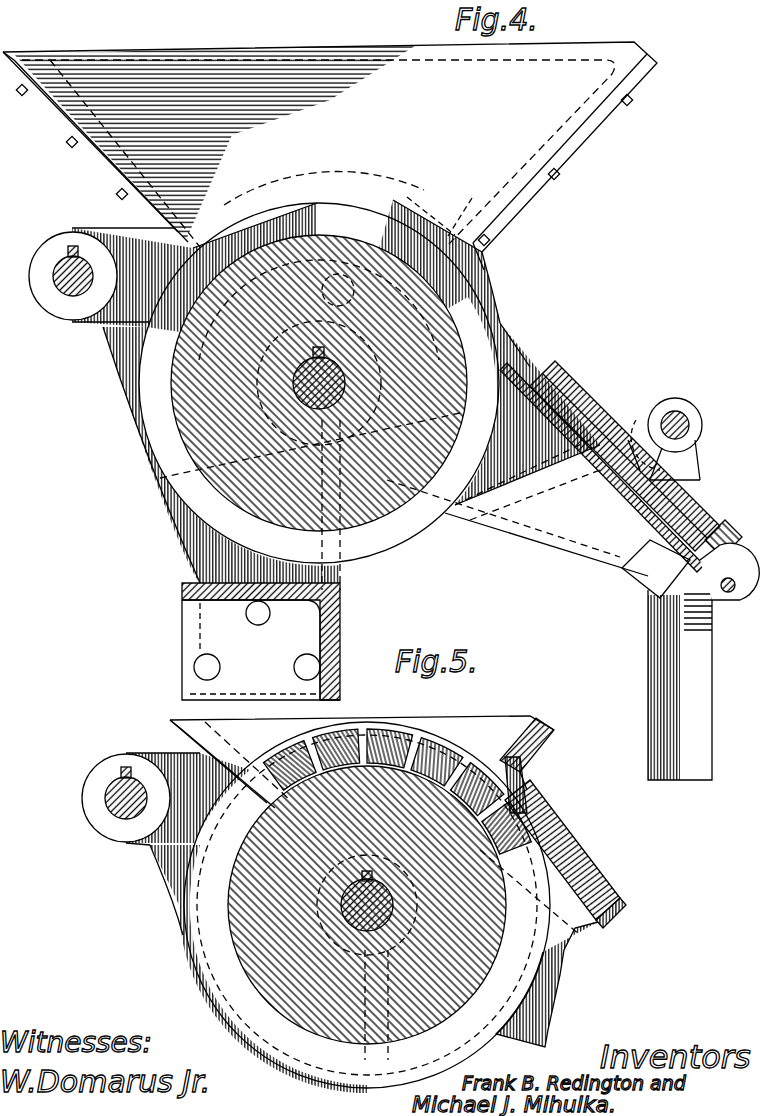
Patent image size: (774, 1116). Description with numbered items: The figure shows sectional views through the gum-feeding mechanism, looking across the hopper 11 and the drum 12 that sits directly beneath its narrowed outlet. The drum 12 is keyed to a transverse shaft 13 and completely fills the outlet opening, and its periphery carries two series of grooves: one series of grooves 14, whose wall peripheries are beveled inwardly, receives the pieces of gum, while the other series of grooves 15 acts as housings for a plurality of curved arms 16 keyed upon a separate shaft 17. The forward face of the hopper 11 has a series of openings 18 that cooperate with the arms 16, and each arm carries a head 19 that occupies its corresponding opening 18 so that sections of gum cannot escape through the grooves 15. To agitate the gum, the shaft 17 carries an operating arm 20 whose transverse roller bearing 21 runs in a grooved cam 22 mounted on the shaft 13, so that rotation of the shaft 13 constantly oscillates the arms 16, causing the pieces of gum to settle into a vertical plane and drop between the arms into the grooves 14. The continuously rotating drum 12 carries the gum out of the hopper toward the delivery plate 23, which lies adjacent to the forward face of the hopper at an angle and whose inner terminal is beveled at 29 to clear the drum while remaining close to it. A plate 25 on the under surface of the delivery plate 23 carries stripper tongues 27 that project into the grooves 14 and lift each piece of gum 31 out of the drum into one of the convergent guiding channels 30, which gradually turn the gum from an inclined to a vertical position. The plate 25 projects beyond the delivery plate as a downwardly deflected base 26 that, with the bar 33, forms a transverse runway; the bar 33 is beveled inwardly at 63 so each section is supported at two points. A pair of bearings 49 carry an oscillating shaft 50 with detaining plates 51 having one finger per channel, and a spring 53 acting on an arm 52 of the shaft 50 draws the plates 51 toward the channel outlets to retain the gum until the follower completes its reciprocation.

In FIG. 4, the hopper 11 is at (330, 147).
In FIG. 5, the hopper 11 is at (272, 742).
In FIG. 4, the drum 12 is at (220, 443).
In FIG. 5, the drum 12 is at (445, 1015).
In FIG. 4, the shaft 13 is at (313, 387).
In FIG. 5, the shaft 13 is at (343, 897).
In FIG. 5, the grooves 14 is at (227, 957).
In FIG. 4, the grooves 15 is at (160, 380).
In FIG. 4, the arms 16 is at (70, 236).
In FIG. 5, the arms 16 is at (160, 766).
In FIG. 4, the shaft 17 is at (72, 300).
In FIG. 5, the shaft 17 is at (110, 832).
In FIG. 4, the openings 18 is at (486, 245).
In FIG. 5, the openings 18 is at (530, 765).
In FIG. 4, the head 19 is at (487, 268).
In FIG. 5, the head 19 is at (522, 788).
In FIG. 4, the operating arm 20 is at (305, 265).
In FIG. 4, the roller bearing 21 is at (440, 222).
In FIG. 4, the grooved cam 22 is at (187, 520).
In FIG. 4, the delivery plate 23 is at (528, 372).
In FIG. 5, the delivery plate 23 is at (603, 918).
In FIG. 4, the plate 25 is at (560, 447).
In FIG. 5, the plate 25 is at (605, 930).
In FIG. 4, the base 26 is at (645, 575).
In FIG. 5, the stripper tongues 27 is at (545, 850).
In FIG. 4, the beveled inner terminal 29 is at (505, 328).
In FIG. 4, the guiding channels 30 is at (536, 380).
In FIG. 4, the piece of gum 31 is at (592, 402).
In FIG. 4, the bar 33 is at (710, 553).
In FIG. 4, the bearings 49 is at (636, 420).
In FIG. 4, the shaft 50 is at (680, 412).
In FIG. 4, the detaining plates 51 is at (690, 438).
In FIG. 4, the arm 52 is at (690, 468).
In FIG. 4, the spring 53 is at (628, 440).
In FIG. 4, the inward bevel 63 is at (722, 594).